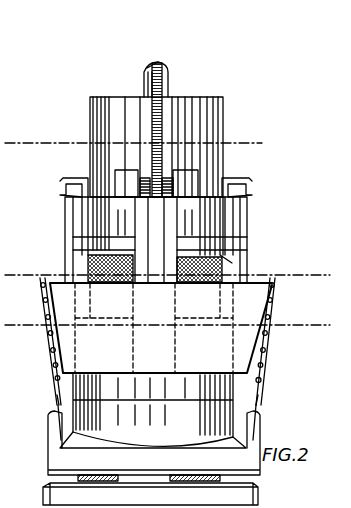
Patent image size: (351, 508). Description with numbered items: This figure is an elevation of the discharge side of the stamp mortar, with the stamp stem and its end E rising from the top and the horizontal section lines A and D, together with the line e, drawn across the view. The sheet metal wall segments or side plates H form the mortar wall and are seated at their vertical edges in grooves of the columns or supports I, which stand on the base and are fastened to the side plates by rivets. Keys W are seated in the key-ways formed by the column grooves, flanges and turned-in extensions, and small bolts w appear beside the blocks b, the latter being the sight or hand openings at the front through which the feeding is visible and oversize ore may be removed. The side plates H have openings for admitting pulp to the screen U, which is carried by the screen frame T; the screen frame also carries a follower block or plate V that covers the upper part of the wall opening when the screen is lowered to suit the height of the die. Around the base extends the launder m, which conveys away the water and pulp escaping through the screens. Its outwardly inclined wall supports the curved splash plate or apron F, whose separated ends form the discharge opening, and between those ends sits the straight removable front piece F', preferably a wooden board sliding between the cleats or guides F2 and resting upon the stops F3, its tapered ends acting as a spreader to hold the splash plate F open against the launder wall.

The rod end / plunger E is at (163, 66).
The columns or supports I is at (169, 92).
The wall segments or side plates H is at (204, 97).
The keys W is at (73, 178).
The threaded bolt w is at (143, 197).
The sight or hand opening b is at (156, 183).
The follower block or plate V is at (88, 217).
The screen frame T is at (88, 240).
The screen U is at (95, 266).
The section line A— A is at (47, 141).
The section line D— D is at (17, 279).
The section line e is at (33, 326).
The removable front piece F' is at (172, 305).
The curved splash plate or apron F is at (164, 341).
The cleats or guides F2 is at (263, 350).
The stops F3 is at (262, 380).
The launder m is at (78, 443).